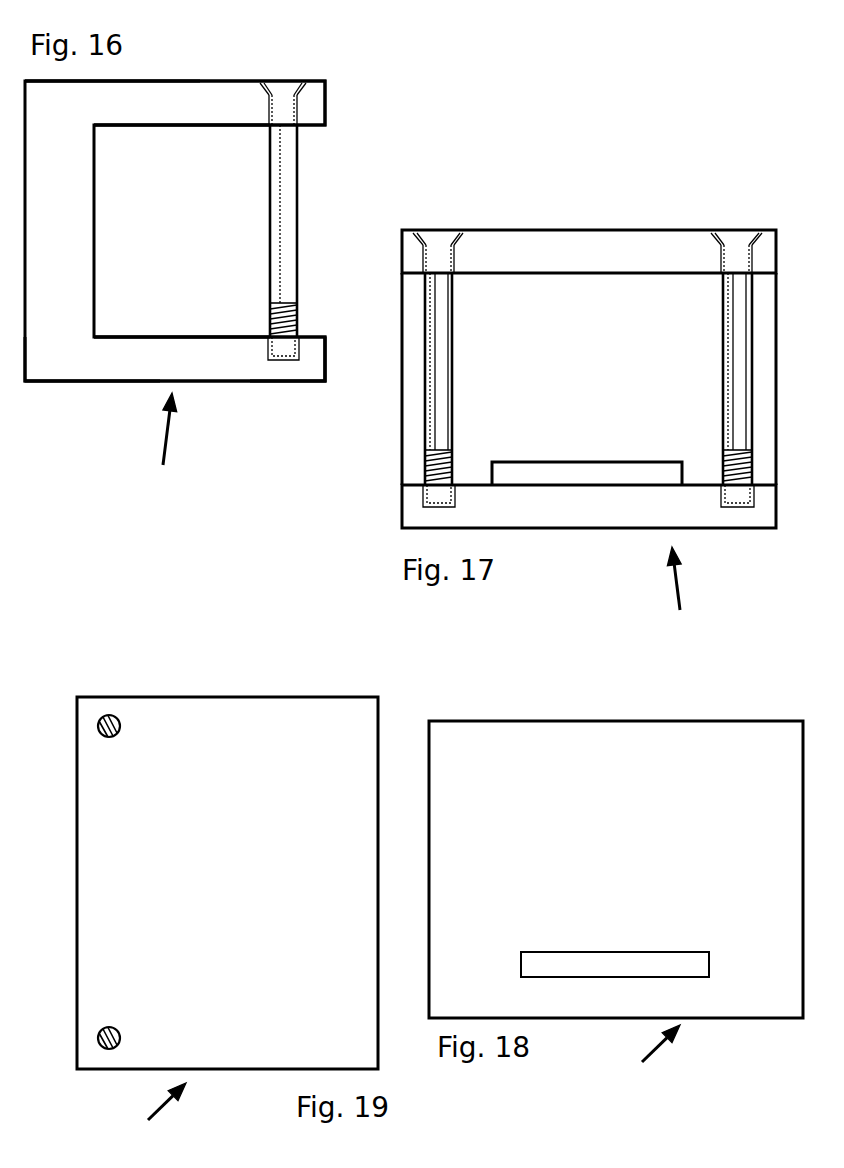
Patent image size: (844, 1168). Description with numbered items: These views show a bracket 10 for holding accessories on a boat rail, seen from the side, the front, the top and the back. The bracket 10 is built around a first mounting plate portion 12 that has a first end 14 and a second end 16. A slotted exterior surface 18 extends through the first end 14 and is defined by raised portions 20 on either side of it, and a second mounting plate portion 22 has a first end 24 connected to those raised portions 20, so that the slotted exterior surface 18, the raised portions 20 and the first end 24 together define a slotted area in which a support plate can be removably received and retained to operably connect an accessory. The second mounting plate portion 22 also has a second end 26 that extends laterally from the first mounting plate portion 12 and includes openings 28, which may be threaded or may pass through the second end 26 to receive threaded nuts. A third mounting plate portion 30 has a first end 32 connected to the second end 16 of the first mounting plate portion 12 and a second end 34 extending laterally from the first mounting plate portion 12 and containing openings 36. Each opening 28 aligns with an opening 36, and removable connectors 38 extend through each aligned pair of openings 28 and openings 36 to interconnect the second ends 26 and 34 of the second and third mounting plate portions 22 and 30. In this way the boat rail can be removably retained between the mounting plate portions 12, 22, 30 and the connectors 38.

In FIG. 16, the bracket 10 is at (161, 457).
In FIG. 17, the bracket 10 is at (681, 609).
In FIG. 19, the bracket 10 is at (142, 1117).
In FIG. 18, the bracket 10 is at (637, 1064).
In FIG. 16, the first mounting plate portion 12 is at (97, 215).
In FIG. 17, the first mounting plate portion 12 is at (589, 379).
In FIG. 18, the first mounting plate portion 12 is at (616, 869).
In FIG. 16, the first end 14 is at (97, 323).
In FIG. 16, the second end 16 is at (98, 133).
In FIG. 17, the slotted exterior surface 18 is at (560, 468).
In FIG. 17, the raised portions 20 is at (483, 470).
In FIG. 16, the second mounting plate portion 22 is at (175, 359).
In FIG. 17, the second mounting plate portion 22 is at (600, 530).
In FIG. 16, the first end 24 is at (90, 367).
In FIG. 16, the second end 26 is at (305, 370).
In FIG. 16, the openings 28 is at (298, 345).
In FIG. 16, the third mounting plate portion 30 is at (175, 103).
In FIG. 17, the third mounting plate portion 30 is at (513, 226).
In FIG. 19, the third mounting plate portion 30 is at (227, 883).
In FIG. 16, the first end 32 is at (98, 100).
In FIG. 16, the second end 34 is at (320, 108).
In FIG. 16, the openings 36 is at (300, 81).
In FIG. 16, the removable connectors 38 is at (298, 177).
In FIG. 19, the removable connectors 38 is at (109, 716).